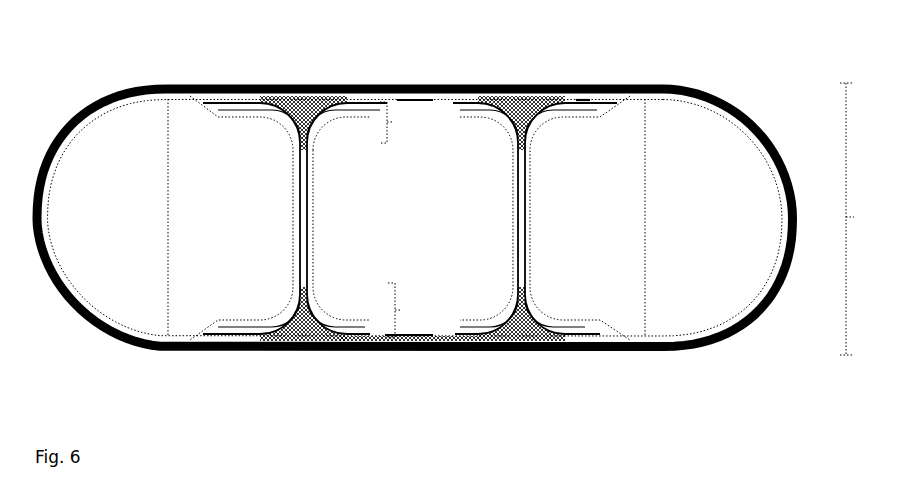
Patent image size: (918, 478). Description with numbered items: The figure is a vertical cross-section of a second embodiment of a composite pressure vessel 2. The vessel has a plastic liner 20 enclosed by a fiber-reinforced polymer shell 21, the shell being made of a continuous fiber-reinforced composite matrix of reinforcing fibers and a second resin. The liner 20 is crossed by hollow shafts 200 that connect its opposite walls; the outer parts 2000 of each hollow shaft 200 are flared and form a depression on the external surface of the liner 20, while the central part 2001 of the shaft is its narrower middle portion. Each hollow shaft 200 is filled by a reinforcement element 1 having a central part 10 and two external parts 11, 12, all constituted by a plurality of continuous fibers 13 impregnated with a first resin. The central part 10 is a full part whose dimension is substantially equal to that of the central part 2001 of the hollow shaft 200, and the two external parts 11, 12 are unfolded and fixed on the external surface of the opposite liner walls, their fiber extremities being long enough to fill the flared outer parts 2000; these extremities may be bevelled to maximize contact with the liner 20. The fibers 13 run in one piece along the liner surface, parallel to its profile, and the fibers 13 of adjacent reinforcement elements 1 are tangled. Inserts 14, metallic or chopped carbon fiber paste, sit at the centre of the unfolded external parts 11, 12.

The reinforcement element 1 is at (647, 216).
The composite pressure vessel 2 is at (861, 219).
The central part 10 is at (340, 147).
The external part 11 is at (402, 122).
The external part 12 is at (409, 310).
The continuous fibers 13 is at (389, 100).
The insert 14 is at (292, 100).
The plastic liner 20 is at (130, 109).
The fiber-reinforced polymer shell 21 is at (126, 86).
The hollow shaft 200 is at (143, 217).
The outer part of the hollow shaft 2000 is at (229, 123).
The central part of the hollow shaft 2001 is at (276, 239).